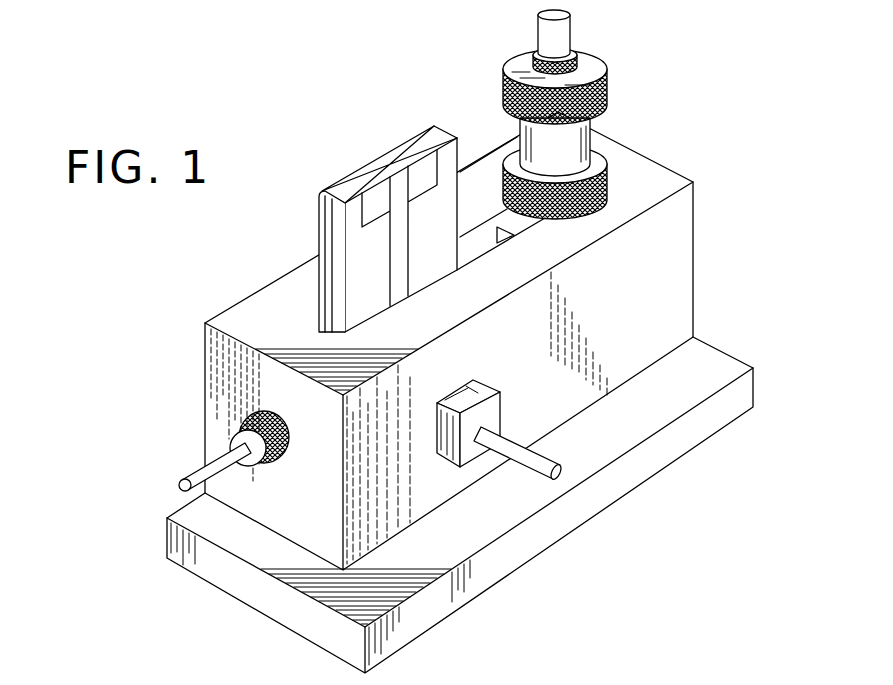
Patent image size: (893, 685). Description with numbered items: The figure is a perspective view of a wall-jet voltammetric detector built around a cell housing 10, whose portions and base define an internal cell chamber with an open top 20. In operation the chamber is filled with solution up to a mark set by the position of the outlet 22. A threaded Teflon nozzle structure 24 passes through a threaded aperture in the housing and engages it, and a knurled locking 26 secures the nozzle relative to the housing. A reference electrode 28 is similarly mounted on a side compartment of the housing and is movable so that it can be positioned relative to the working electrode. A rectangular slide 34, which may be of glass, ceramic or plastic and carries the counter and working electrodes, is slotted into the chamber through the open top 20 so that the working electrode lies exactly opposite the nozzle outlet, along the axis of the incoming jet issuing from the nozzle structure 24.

The cell housing 10 is at (699, 242).
The top 20 is at (473, 242).
The outlet 22 is at (190, 472).
The threaded Teflon nozzle structure 24 is at (548, 450).
The knurled locking 26 is at (485, 384).
The reference electrode 28 is at (608, 89).
The rectangular slide 34 is at (352, 173).